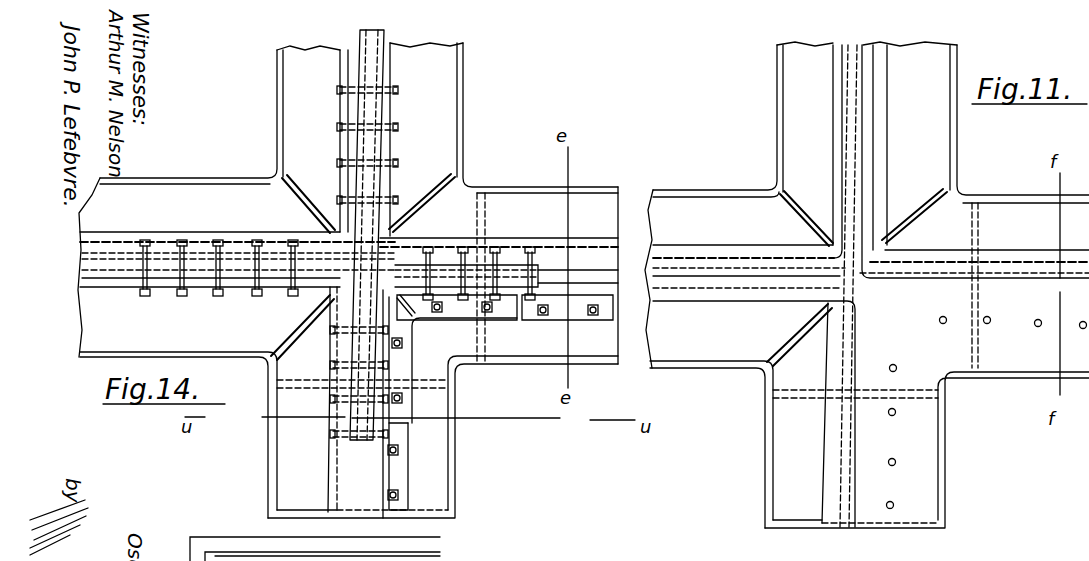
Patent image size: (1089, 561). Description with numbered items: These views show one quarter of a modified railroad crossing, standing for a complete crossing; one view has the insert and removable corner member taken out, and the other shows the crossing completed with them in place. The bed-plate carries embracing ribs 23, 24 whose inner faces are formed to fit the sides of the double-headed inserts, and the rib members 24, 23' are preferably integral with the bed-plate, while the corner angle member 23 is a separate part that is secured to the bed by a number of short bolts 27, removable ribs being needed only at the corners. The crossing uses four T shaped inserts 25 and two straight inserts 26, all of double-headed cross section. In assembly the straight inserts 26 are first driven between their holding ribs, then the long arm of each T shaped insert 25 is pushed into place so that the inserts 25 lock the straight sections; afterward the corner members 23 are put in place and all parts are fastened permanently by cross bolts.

In FIG. 14, the corner angle member 23 is at (412, 466).
In FIG. 11, the rib member 23' is at (845, 220).
In FIG. 14, the embracing rib 24 is at (327, 397).
In FIG. 11, the embracing rib 24 is at (825, 424).
In FIG. 14, the T shaped insert 25 is at (376, 191).
In FIG. 14, the straight insert 26 is at (237, 258).
In FIG. 14, the short bolt 27 is at (437, 314).